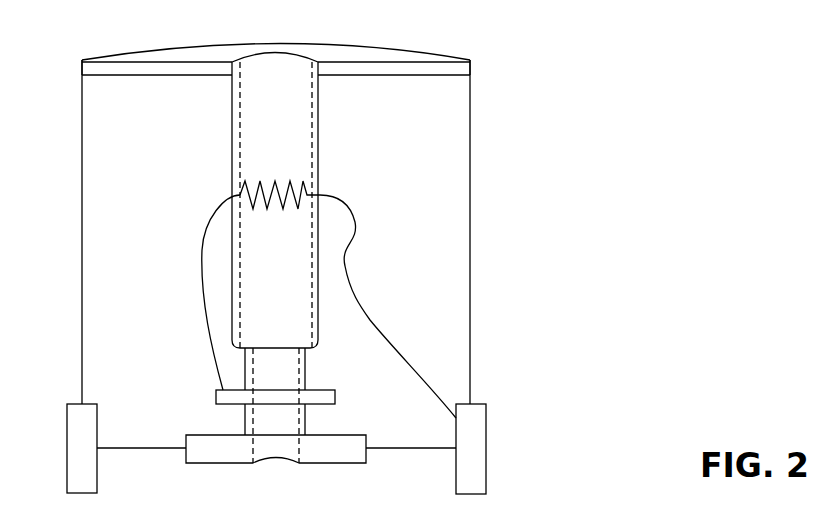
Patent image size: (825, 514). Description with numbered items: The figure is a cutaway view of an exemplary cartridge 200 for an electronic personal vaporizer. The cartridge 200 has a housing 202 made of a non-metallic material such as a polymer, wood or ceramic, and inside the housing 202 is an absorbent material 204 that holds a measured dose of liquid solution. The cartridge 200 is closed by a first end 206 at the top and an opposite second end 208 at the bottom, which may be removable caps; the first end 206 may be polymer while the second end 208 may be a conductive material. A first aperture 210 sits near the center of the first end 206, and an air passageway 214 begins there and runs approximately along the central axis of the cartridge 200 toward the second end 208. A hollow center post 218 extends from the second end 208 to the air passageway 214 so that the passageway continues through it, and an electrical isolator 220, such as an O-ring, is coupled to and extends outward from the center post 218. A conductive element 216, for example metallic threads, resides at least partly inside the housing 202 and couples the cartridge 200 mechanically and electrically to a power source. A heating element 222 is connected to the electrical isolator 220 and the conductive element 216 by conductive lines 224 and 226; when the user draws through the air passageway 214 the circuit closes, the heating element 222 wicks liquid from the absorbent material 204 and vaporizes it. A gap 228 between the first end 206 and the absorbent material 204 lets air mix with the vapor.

The cartridge 200 is at (545, 104).
The housing 202 is at (470, 193).
The absorbent material 204 is at (276, 107).
The first end 206 is at (142, 48).
The second end 208 is at (172, 448).
The first aperture 210 is at (282, 52).
The air passageway 214 is at (275, 262).
The conductive element 216 is at (97, 418).
The center post 218 is at (232, 463).
The electrical isolator 220 is at (318, 404).
The heating element 222 is at (247, 183).
The conductive line 224 is at (198, 262).
The conductive line 226 is at (367, 316).
The gap 228 is at (470, 62).